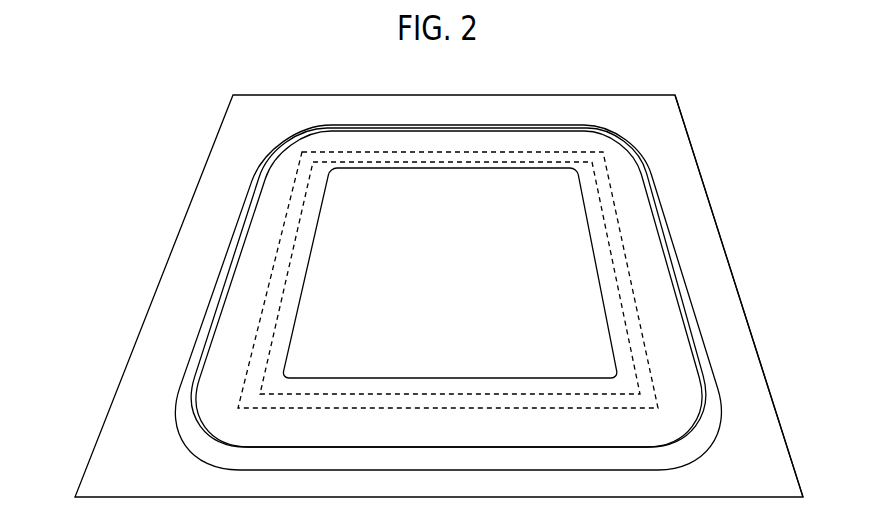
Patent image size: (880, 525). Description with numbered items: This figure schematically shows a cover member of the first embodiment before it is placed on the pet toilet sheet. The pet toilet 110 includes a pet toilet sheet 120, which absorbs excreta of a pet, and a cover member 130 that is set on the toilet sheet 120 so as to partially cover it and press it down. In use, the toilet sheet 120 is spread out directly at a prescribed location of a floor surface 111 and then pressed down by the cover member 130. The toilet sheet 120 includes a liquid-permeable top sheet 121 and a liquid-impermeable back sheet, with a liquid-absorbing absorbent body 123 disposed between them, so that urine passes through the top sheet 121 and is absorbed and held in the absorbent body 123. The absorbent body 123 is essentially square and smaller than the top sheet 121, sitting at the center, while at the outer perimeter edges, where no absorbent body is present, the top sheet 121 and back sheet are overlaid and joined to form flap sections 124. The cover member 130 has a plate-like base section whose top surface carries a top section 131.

The pet toilet 110 is at (612, 117).
The floor surface 111 is at (735, 397).
The pet toilet sheet 120 is at (142, 202).
The top sheet 121 is at (327, 298).
The absorbent body 123 is at (278, 330).
The flap sections 124 is at (253, 355).
The cover member 130 is at (670, 212).
The top section 131 is at (657, 298).